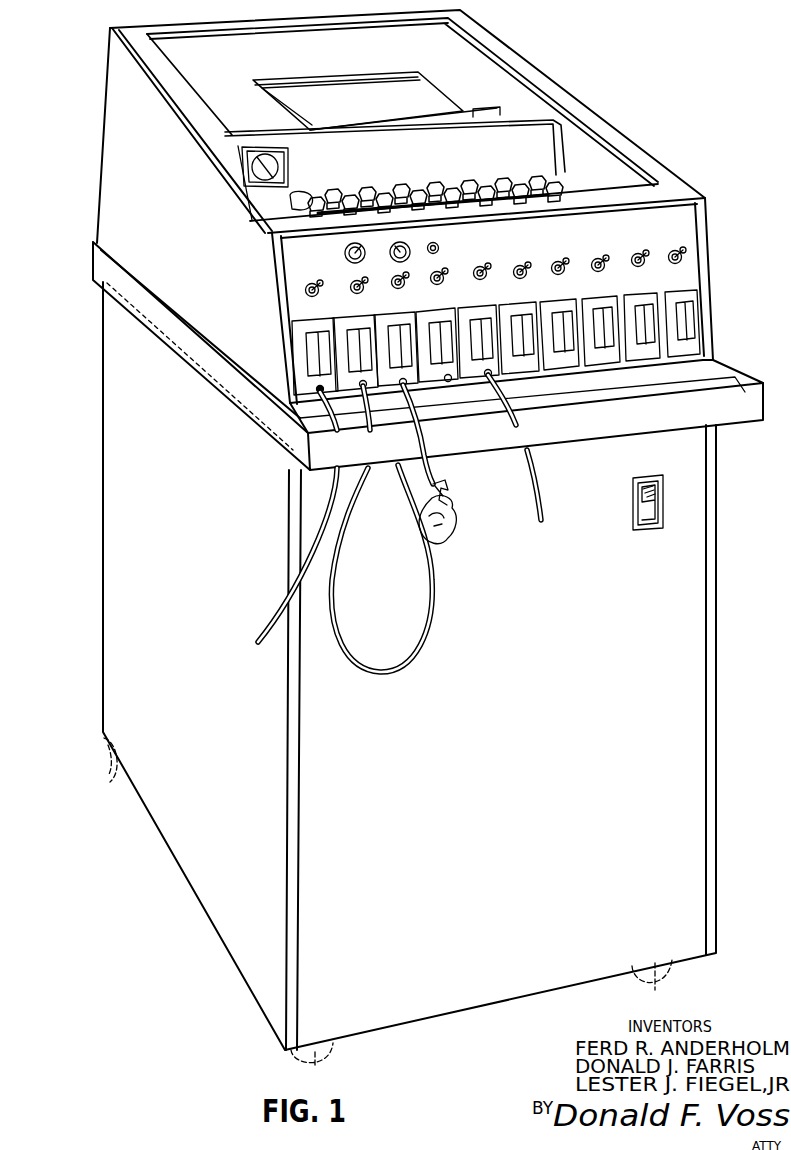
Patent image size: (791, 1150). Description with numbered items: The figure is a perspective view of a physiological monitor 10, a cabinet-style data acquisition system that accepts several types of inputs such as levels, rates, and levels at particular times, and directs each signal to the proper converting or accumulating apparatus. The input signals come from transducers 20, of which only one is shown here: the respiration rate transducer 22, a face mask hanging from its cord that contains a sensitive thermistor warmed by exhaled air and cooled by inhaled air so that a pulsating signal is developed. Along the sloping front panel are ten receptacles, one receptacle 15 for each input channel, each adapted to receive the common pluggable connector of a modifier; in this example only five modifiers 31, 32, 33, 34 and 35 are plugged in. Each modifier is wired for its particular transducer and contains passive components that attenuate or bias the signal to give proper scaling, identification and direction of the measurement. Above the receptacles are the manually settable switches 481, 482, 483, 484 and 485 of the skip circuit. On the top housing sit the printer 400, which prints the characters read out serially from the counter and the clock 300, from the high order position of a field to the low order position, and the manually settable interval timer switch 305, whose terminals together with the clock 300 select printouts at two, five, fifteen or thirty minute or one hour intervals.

The physiological monitor 10 is at (82, 748).
The receptacle 15 is at (550, 291).
The transducer 20 is at (465, 520).
The respiration rate transducer 22 is at (452, 503).
The modifier 31 is at (302, 330).
The modifier 32 is at (350, 328).
The modifier 33 is at (391, 326).
The modifier 34 is at (436, 322).
The modifier 35 is at (480, 320).
The clock 300 is at (300, 188).
The interval timer switch 305 is at (293, 162).
The printer 400 is at (460, 170).
The manually settable switch 481 is at (310, 284).
The manually settable switch 482 is at (355, 283).
The manually settable switch 483 is at (397, 277).
The manually settable switch 484 is at (437, 262).
The manually settable switch 485 is at (479, 268).